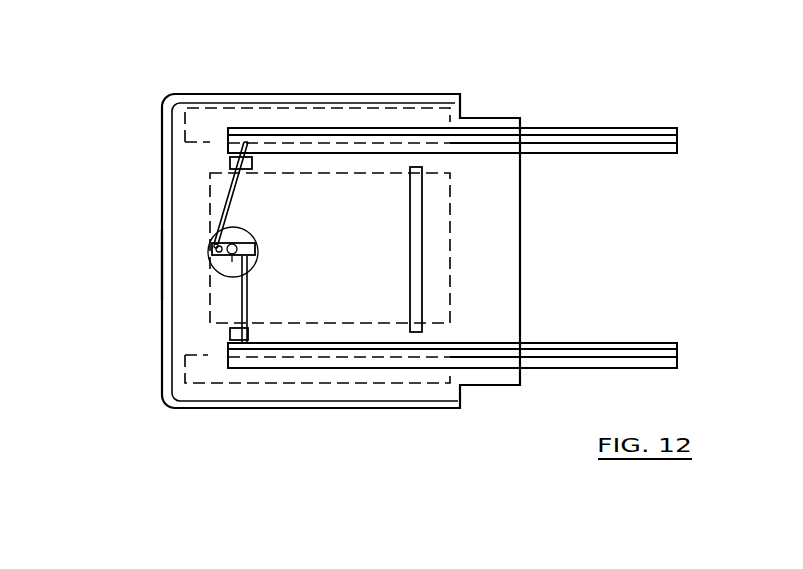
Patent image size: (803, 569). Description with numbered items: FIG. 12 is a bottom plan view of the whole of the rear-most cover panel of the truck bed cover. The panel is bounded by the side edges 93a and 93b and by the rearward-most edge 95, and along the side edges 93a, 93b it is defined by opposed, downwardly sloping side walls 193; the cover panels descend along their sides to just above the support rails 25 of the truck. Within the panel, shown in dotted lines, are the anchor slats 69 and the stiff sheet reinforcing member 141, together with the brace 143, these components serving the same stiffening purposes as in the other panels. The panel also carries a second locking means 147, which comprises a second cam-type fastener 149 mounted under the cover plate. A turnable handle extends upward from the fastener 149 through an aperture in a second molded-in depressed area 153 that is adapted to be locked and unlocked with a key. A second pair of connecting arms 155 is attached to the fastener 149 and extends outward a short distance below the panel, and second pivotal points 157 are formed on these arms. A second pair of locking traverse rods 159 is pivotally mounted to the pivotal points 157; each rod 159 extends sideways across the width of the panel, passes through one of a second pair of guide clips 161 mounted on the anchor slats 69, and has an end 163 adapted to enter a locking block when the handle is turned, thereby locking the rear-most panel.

The support rails 25 is at (607, 130).
The anchor slats 69 is at (377, 108).
The side edge 93a is at (328, 410).
The side edge 93b is at (352, 95).
The rearward-most edge 95 is at (160, 352).
The stiff sheet reinforcing member 141 is at (450, 207).
The brace 143 is at (422, 253).
The second locking means 147 is at (204, 234).
The second cam-type fastener 149 is at (232, 262).
The second molded-in depressed area 153 is at (240, 232).
The second pair of connecting arms 155 is at (217, 255).
The second pivotal points 157 is at (257, 252).
The second pair of locking traverse rods 159 is at (226, 200).
The second pair of guide clips 161 is at (228, 160).
The rod end 163 is at (245, 142).
The downwardly sloping side walls 193 is at (343, 100).